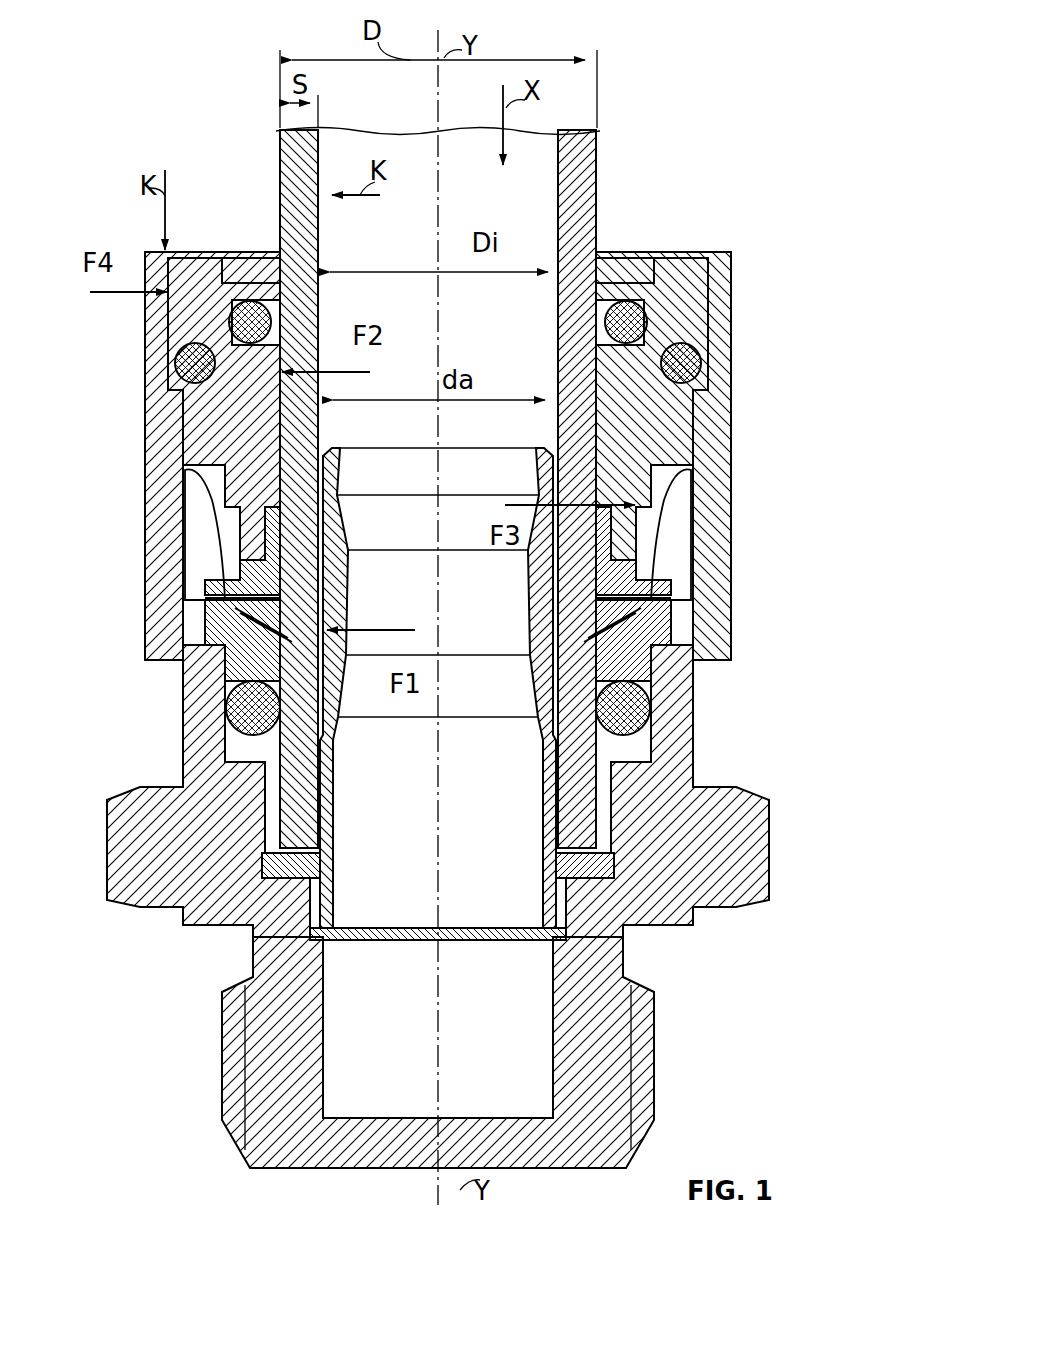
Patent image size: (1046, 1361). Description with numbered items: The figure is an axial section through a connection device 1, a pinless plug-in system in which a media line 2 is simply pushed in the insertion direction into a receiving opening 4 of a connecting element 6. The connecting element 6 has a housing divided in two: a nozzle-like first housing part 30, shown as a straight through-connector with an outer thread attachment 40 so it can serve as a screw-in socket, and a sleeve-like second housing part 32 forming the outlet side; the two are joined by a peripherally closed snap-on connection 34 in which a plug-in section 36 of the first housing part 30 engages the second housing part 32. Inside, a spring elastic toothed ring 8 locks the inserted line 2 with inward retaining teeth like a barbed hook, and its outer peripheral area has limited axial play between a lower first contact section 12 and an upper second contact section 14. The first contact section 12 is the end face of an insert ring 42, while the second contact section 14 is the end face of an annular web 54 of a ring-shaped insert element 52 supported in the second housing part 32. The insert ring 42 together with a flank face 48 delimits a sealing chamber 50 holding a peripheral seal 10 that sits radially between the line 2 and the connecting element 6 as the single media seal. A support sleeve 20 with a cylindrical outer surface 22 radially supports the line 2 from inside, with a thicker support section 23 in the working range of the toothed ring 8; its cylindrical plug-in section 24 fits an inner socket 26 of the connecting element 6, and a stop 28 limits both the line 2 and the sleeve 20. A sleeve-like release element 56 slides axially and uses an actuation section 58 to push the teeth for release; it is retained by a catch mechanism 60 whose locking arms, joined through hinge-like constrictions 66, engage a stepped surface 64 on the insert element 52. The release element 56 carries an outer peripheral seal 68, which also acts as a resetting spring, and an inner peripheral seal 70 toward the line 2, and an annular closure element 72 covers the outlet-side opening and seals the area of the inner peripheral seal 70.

The connection device 1 is at (95, 770).
The media line 2 is at (585, 190).
The receiving opening 4 is at (610, 815).
The connecting element 6 is at (740, 480).
The toothed ring 8 is at (195, 582).
The peripheral seal 10 is at (640, 706).
The first contact section 12 is at (545, 625).
The second contact section 14 is at (665, 606).
The support sleeve 20 is at (360, 478).
The cylindrical outer surface 22 is at (315, 790).
The support section 23 is at (340, 600).
The cylindrical plug-in section 24 is at (555, 922).
The inner socket 26 is at (300, 882).
The stop 28 is at (598, 880).
The first housing part 30 is at (215, 895).
The second housing part 32 is at (160, 400).
The snap-on connection 34 is at (165, 630).
The plug-in section 36 is at (240, 606).
The outer thread attachment 40 is at (645, 1088).
The insert ring 42 is at (650, 668).
The flank face 48 is at (245, 758).
The sealing chamber 50 is at (630, 748).
The insert element 52 is at (680, 550).
The annular web 54 is at (228, 592).
The release element 56 is at (217, 315).
The actuation section 58 is at (265, 588).
The catch mechanism 60 is at (690, 455).
The stepped surface 64 is at (215, 505).
The hinge-like constriction 66 is at (190, 432).
The outer peripheral seal 68 is at (695, 355).
The inner peripheral seal 70 is at (605, 322).
The closure element 72 is at (628, 265).